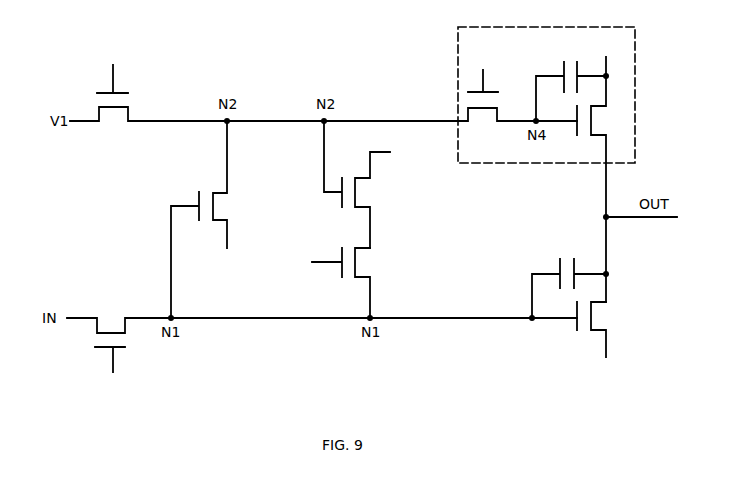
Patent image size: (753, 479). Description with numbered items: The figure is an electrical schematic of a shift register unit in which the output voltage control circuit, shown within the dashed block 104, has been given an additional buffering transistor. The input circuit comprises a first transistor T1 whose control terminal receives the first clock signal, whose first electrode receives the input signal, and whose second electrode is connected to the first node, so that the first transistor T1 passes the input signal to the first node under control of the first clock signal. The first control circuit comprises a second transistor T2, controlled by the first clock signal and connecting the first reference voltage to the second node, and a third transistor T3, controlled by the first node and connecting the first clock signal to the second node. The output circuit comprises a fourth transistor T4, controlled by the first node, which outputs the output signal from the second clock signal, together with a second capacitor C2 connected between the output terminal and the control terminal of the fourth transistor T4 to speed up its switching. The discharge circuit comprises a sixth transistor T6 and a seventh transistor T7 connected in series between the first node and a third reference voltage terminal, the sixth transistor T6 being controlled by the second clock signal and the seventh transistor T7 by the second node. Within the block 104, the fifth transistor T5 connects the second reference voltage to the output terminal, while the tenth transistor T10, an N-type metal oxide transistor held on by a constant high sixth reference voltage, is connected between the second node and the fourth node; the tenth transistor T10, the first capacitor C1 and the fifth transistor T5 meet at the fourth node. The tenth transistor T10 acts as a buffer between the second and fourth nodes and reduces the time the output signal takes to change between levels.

The output control sub-circuit 104 is at (530, 164).
The first transistor T1 is at (112, 347).
The second transistor T2 is at (123, 105).
The third transistor T3 is at (207, 219).
The fourth transistor T4 is at (601, 341).
The fifth transistor T5 is at (600, 168).
The sixth transistor T6 is at (343, 280).
The seventh transistor T7 is at (369, 184).
The tenth transistor T10 is at (483, 97).
The first capacitor C1 is at (571, 86).
The second capacitor C2 is at (569, 281).